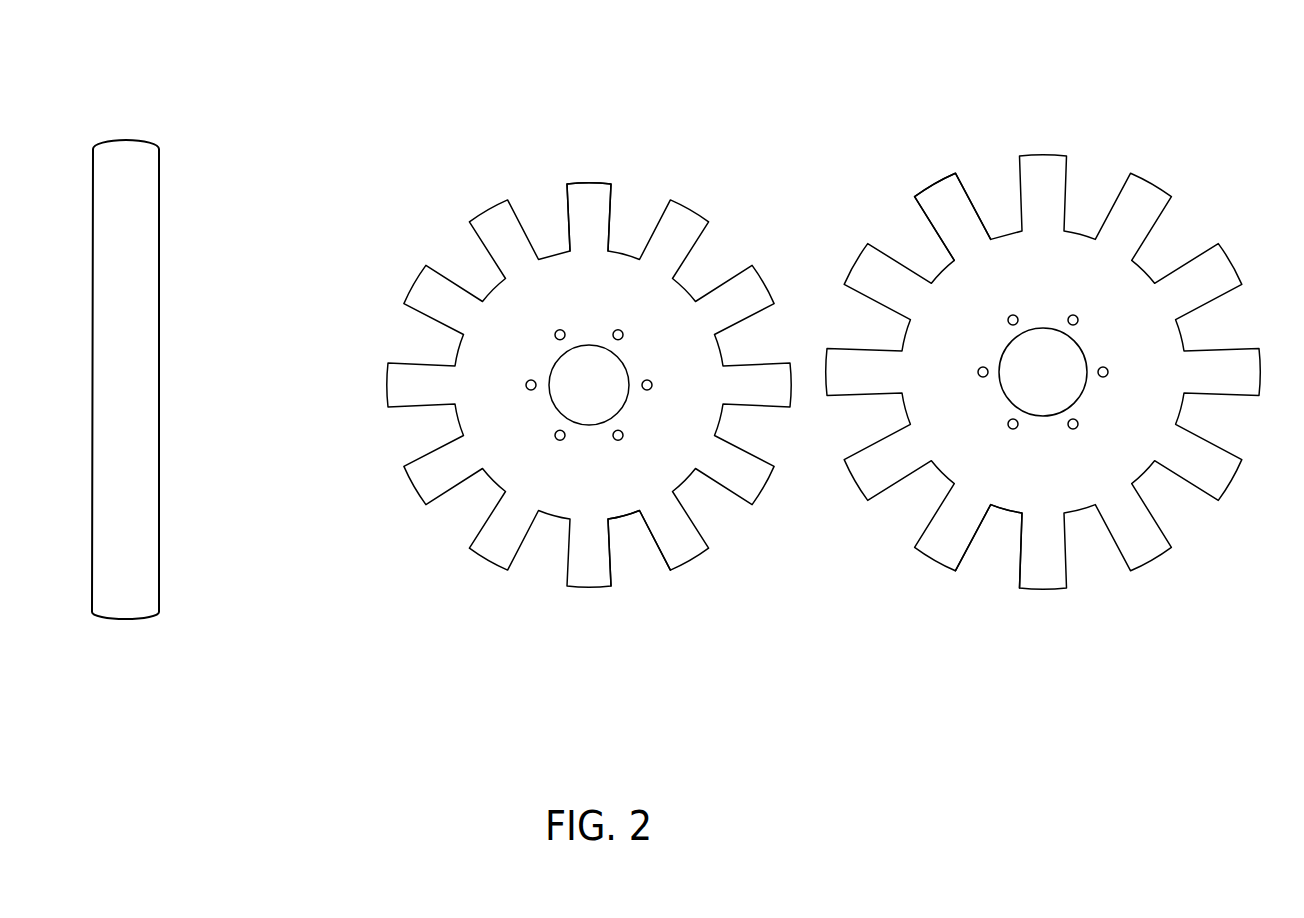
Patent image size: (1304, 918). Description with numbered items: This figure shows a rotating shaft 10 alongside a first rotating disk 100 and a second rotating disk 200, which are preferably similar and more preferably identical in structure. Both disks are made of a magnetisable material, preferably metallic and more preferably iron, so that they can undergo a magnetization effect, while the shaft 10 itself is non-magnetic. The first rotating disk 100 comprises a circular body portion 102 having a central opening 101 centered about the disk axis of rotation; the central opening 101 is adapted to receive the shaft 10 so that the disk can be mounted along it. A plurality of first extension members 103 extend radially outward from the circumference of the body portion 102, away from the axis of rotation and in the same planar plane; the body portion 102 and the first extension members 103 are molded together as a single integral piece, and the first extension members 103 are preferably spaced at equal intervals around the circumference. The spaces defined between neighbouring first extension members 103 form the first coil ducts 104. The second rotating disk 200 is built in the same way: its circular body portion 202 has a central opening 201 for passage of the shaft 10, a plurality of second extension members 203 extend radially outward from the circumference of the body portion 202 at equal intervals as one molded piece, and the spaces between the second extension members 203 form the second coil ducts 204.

The rotating shaft 10 is at (159, 215).
The first rotating disk 100 is at (568, 383).
The central opening 101 is at (595, 371).
The circular body portion 102 is at (640, 459).
The first extension members 103 is at (594, 200).
The first coil ducts 104 is at (633, 548).
The second rotating disk 200 is at (1031, 375).
The central opening 201 is at (1046, 380).
The circular body portion 202 is at (974, 434).
The second extension members 203 is at (948, 200).
The second coil ducts 204 is at (999, 536).